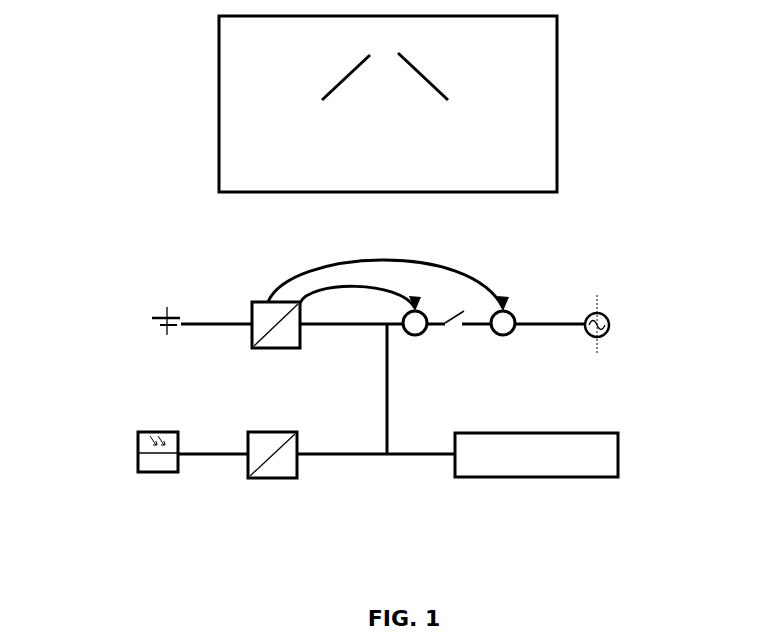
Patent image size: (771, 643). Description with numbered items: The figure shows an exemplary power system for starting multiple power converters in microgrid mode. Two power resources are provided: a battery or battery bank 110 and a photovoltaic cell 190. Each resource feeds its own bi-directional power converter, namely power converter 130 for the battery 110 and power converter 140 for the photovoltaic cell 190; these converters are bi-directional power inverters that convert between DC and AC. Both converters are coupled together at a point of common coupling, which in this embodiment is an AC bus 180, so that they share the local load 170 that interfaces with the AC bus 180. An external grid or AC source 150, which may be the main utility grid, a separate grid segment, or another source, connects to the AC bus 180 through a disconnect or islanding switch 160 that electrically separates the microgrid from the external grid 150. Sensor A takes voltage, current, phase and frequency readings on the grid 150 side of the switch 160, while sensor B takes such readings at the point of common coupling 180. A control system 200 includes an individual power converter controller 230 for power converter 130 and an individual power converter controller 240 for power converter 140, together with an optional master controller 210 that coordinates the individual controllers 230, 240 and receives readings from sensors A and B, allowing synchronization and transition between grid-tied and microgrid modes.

The battery 110 is at (130, 318).
The power converter 130 is at (232, 302).
The power converter 140 is at (267, 487).
The external grid/AC source 150 is at (613, 310).
The disconnect/islanding switch 160 is at (447, 338).
The load 170 is at (572, 487).
The AC bus 180 is at (390, 395).
The photovoltaic cell 190 is at (120, 468).
The control system 200 is at (565, 162).
The master controller 210 is at (378, 66).
The power converter controller 230 is at (262, 302).
The power converter controller 240 is at (292, 431).